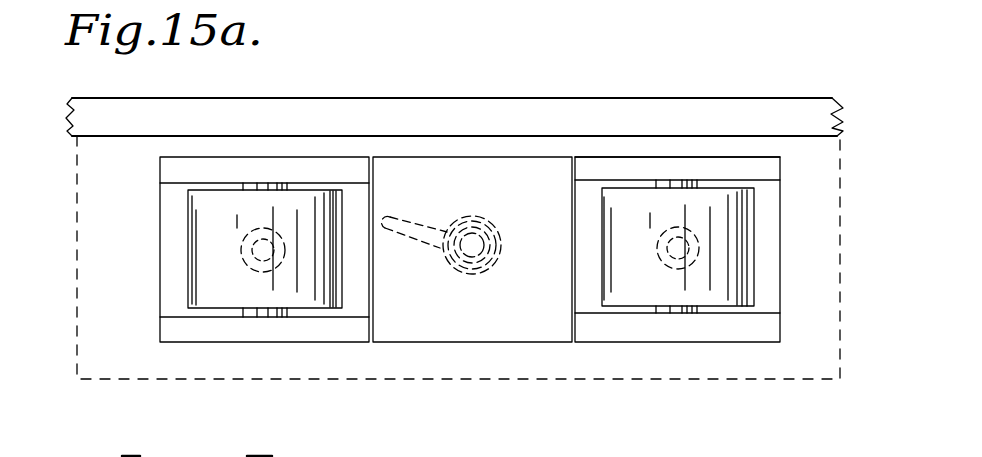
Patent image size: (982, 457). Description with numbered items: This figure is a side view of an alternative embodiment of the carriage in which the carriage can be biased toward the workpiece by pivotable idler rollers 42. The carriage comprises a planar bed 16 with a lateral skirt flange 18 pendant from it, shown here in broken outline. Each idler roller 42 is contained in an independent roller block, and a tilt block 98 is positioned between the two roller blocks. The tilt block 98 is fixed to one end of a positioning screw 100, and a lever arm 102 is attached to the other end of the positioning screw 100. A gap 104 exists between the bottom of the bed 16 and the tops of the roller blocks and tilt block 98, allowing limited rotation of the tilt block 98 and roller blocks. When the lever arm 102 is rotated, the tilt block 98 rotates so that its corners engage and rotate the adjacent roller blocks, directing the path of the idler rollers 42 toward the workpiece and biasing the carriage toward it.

The planar bed 16 is at (763, 117).
The lateral skirt flange 18 is at (593, 378).
The pivotable idler roller 42 is at (217, 251).
The tilt block 98 is at (490, 180).
The positioning screw 100 is at (448, 272).
The lever arm 102 is at (407, 213).
The gap 104 is at (623, 147).